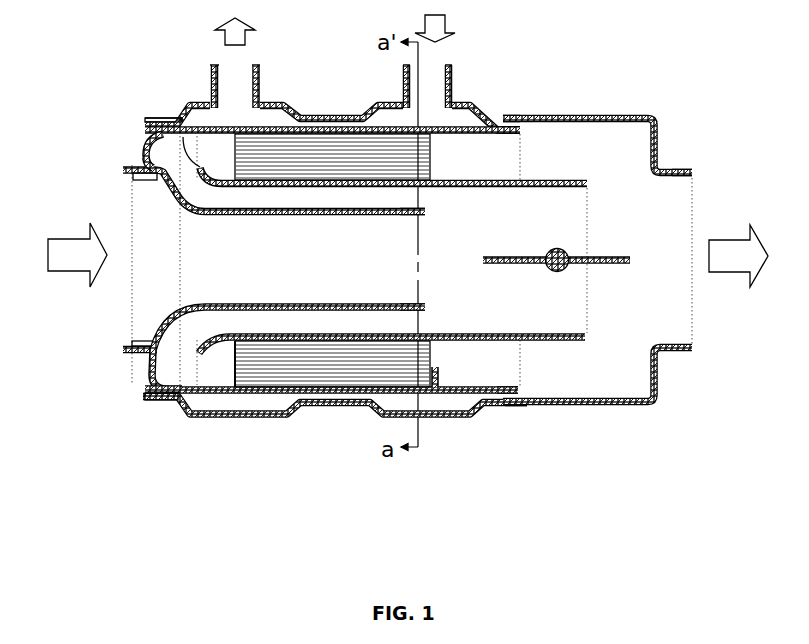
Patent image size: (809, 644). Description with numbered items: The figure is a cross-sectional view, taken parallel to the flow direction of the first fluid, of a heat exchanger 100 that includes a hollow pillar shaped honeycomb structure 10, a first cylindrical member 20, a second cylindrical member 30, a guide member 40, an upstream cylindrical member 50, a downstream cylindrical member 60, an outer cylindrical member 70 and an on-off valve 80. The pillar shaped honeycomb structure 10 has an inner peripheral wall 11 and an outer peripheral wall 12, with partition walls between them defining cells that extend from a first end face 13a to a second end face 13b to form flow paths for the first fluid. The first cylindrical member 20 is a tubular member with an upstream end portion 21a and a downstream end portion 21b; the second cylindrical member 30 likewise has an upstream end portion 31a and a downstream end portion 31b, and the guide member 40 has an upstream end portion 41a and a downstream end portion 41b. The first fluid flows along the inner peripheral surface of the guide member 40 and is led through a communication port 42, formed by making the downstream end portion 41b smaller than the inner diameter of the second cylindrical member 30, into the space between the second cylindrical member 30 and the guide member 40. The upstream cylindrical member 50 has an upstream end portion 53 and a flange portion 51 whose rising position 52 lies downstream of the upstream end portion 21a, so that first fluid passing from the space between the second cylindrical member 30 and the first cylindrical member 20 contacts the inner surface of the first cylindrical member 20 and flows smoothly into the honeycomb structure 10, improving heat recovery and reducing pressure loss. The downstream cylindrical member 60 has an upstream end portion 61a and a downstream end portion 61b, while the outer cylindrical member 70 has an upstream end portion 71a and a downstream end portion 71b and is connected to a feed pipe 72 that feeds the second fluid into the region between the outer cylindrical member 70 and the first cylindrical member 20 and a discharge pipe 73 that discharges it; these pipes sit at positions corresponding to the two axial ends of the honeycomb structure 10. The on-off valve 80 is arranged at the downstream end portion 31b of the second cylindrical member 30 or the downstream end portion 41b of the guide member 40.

The heat exchanger 100 is at (411, 565).
The hollow pillar shaped honeycomb structure 10 is at (333, 362).
The inner peripheral wall 11 is at (278, 341).
The outer peripheral wall 12 is at (353, 388).
The first end face 13a is at (235, 362).
The second end face 13b is at (431, 368).
The first cylindrical member 20 is at (460, 391).
The upstream end portion 21a is at (144, 389).
The downstream end portion 21b is at (512, 389).
The second cylindrical member 30 is at (480, 180).
The upstream end portion 31a is at (200, 166).
The downstream end portion 31b is at (651, 118).
The guide member 40 is at (188, 204).
The upstream end portion 41a is at (130, 170).
The downstream end portion 41b is at (425, 213).
The communication port 42 is at (424, 322).
The upstream cylindrical member 50 is at (145, 162).
The flange portion 51 is at (150, 143).
The rising position 52 is at (143, 165).
The upstream end portion 53 is at (123, 349).
The downstream cylindrical member 60 is at (660, 142).
The upstream end portion 61a is at (497, 117).
The downstream end portion 61b is at (691, 173).
The outer cylindrical member 70 is at (236, 416).
The upstream end portion 71a is at (144, 396).
The downstream end portion 71b is at (532, 404).
The feed pipe 72 is at (452, 80).
The discharge pipe 73 is at (259, 80).
The on-off valve 80 is at (565, 269).